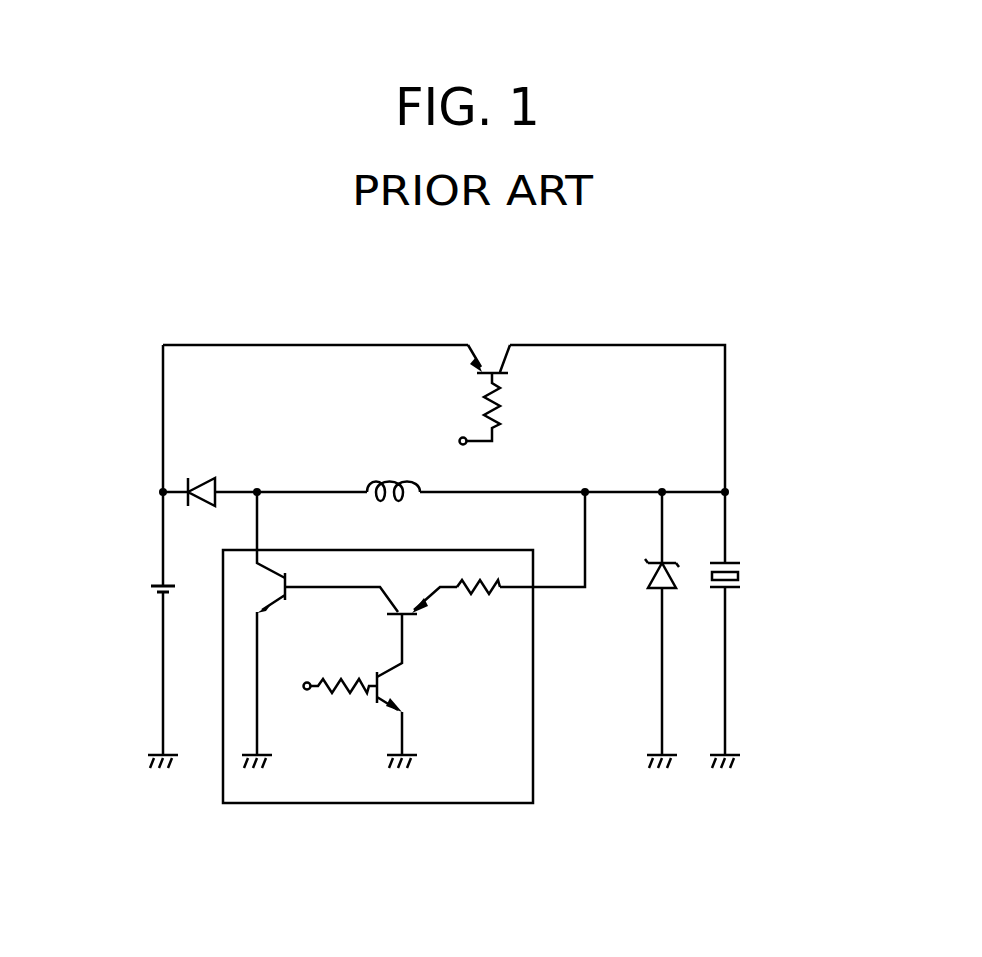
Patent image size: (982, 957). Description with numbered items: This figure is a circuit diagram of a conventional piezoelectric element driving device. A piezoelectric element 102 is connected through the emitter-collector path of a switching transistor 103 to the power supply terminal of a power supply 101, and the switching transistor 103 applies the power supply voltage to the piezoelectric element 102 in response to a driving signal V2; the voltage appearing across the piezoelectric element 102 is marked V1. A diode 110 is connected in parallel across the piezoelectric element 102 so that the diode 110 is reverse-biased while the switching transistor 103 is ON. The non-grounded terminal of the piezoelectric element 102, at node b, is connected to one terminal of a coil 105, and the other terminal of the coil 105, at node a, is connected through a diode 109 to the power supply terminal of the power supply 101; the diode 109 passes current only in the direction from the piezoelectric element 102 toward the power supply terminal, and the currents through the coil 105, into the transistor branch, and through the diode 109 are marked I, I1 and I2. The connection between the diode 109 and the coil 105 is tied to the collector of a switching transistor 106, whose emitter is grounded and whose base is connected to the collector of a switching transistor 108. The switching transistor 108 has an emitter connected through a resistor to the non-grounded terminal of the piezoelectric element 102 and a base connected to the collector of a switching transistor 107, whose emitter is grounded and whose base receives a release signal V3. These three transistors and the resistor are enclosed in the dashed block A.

The power supply 101 is at (152, 586).
The piezoelectric element 102 is at (740, 576).
The switching transistor 103 is at (498, 355).
The coil 105 is at (387, 480).
The switching transistor 106 is at (289, 598).
The switching transistor 107 is at (398, 680).
The switching transistor 108 is at (418, 608).
The diode 109 is at (190, 480).
The diode 110 is at (656, 563).
The control circuit block A is at (533, 790).
The output voltage V1 is at (726, 520).
The driving signal V2 is at (477, 438).
The release signal V3 is at (318, 690).
The current I is at (320, 492).
The current I1 is at (259, 516).
The current I2 is at (246, 491).
The node a is at (279, 490).
The node b is at (543, 490).